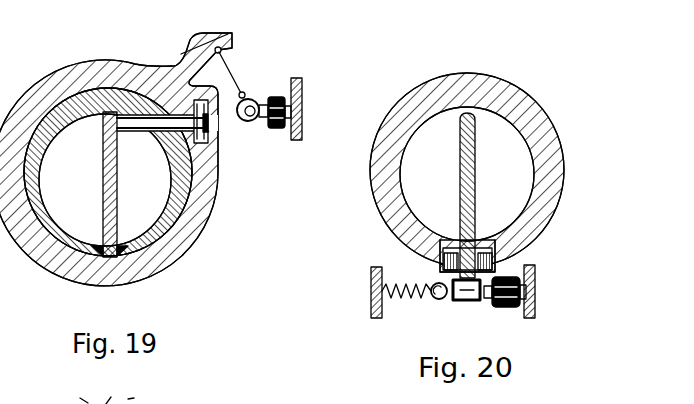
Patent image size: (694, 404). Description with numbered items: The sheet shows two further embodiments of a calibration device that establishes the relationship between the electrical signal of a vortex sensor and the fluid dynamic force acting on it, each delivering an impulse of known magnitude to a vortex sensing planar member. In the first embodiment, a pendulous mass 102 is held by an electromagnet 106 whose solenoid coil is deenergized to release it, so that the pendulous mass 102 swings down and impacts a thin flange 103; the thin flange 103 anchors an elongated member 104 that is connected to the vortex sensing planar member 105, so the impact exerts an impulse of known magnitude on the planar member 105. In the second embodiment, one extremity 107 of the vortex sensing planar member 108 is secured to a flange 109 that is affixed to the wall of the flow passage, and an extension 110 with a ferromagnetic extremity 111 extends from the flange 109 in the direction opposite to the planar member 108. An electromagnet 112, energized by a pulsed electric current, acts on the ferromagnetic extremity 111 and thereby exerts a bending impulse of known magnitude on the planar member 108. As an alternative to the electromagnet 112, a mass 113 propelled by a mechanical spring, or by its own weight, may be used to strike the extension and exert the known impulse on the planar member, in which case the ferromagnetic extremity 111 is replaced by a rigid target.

In FIG. 19, the pendulous mass 102 is at (257, 100).
In FIG. 19, the thin flange 103 is at (208, 122).
In FIG. 19, the elongated member 104 is at (136, 98).
In FIG. 19, the vortex sensing planar member 105 is at (100, 186).
In FIG. 19, the adjusting knob 106 is at (277, 97).
In FIG. 20, the extremity of the planar member 107 is at (380, 212).
In FIG. 20, the vortex sensing planar member 108 is at (473, 155).
In FIG. 20, the flange 109 is at (485, 222).
In FIG. 20, the extension 110 is at (441, 270).
In FIG. 20, the ferromagnetic extremity 111 is at (473, 301).
In FIG. 20, the electromagnet 112 is at (500, 306).
In FIG. 20, the mass 113 is at (432, 297).